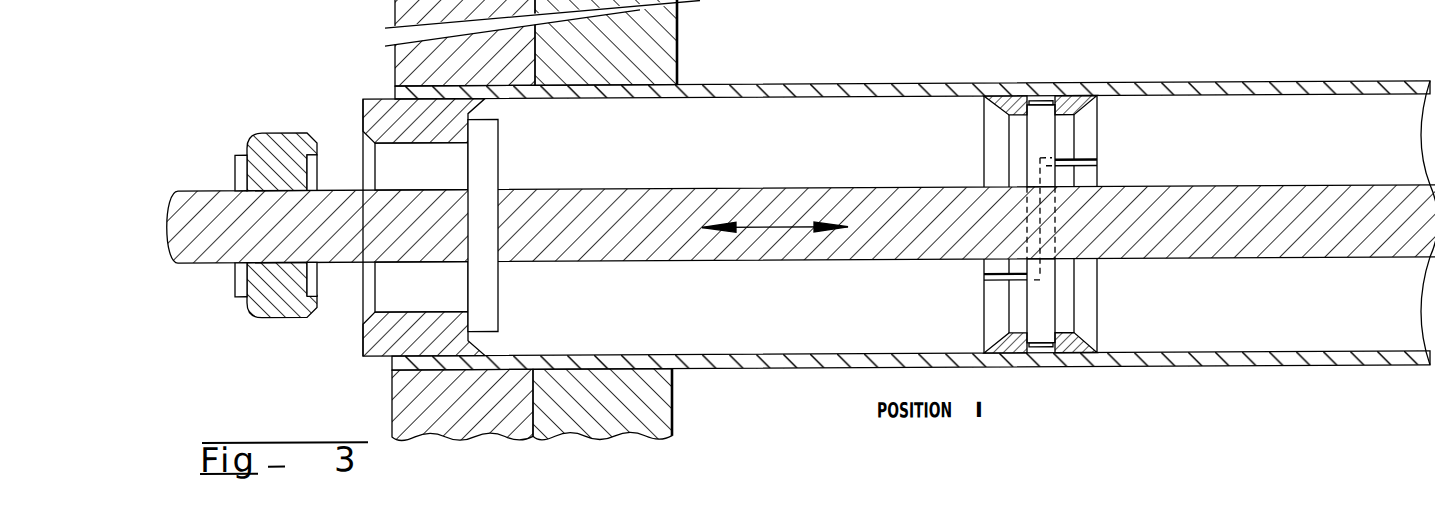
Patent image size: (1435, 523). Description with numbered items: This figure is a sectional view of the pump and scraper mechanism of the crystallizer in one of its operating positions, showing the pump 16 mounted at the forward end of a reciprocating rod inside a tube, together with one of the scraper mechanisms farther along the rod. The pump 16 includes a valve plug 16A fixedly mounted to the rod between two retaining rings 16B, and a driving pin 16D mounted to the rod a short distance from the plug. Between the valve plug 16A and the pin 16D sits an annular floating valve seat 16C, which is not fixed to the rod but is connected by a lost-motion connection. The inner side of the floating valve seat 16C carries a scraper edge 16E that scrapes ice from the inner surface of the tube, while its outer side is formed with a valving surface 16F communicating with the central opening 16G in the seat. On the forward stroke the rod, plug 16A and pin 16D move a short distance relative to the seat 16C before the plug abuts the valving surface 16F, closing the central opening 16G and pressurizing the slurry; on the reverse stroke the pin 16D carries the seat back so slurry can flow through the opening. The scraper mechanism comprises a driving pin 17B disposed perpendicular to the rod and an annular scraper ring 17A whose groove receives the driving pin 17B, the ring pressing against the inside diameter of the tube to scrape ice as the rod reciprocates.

The pump 16 is at (315, 58).
The valve plug 16A is at (275, 130).
The retaining rings 16B is at (235, 164).
The floating valve seat 16C is at (457, 106).
The driving pin 16D is at (485, 162).
The scraper edge 16E is at (484, 349).
The valving surface 16F is at (362, 306).
The central opening 16G is at (398, 273).
The scraper ring 17A is at (1085, 107).
The driving pin 17B is at (1042, 303).